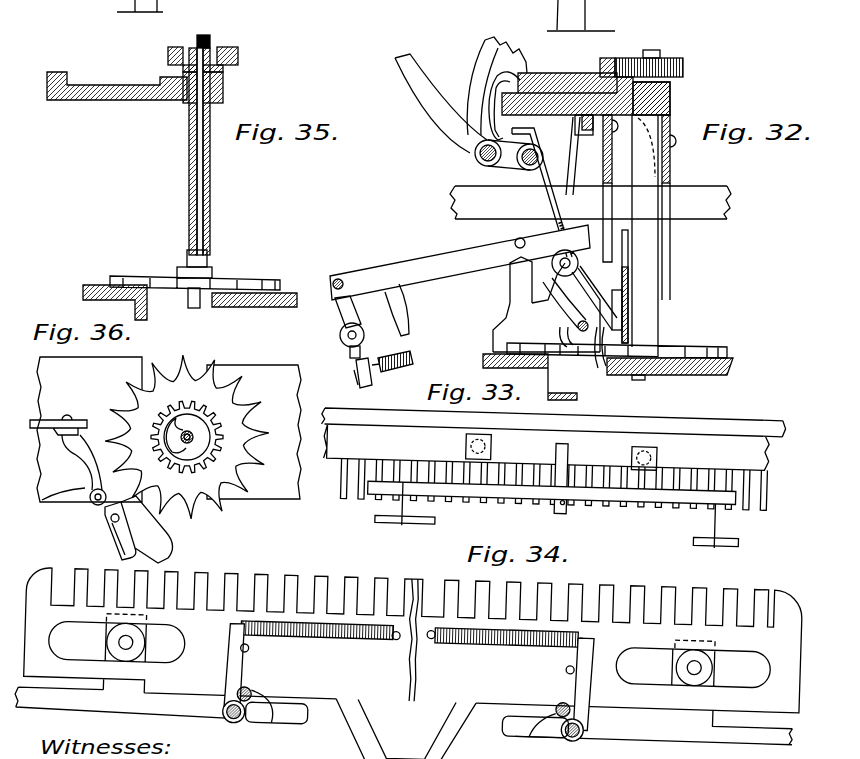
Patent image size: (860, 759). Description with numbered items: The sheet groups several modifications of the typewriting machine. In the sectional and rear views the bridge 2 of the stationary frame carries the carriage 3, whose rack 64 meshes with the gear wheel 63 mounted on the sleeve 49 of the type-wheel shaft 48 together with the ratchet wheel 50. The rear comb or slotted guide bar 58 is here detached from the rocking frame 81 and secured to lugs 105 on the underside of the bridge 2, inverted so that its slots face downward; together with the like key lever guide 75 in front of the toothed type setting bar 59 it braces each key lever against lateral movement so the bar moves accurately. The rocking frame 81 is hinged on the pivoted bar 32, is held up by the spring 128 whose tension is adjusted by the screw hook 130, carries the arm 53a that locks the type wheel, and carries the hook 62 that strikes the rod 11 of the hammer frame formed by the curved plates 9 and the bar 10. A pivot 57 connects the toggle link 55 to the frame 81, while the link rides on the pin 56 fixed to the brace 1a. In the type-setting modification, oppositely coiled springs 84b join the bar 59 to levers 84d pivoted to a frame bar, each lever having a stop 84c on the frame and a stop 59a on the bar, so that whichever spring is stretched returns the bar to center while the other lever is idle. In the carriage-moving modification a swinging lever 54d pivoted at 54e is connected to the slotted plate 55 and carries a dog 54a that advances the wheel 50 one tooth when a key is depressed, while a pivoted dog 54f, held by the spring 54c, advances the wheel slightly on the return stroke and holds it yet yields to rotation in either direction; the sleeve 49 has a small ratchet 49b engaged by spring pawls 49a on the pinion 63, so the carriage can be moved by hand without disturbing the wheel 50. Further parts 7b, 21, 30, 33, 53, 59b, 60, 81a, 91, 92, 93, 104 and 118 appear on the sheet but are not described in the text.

In FIG. 36, the brace 1a is at (169, 429).
In FIG. 33, the brace 1a is at (703, 385).
In FIG. 35, the bridge 2 is at (108, 100).
In FIG. 32, the bridge 2 is at (497, 80).
In FIG. 34, the bridge 2 is at (347, 410).
In FIG. 32, the carriage 3 is at (532, 72).
In FIG. 34, the frame bar 7b is at (205, 714).
In FIG. 32, the curved plate 9 is at (425, 108).
In FIG. 32, the bar 10 is at (476, 160).
In FIG. 32, the rod 11 is at (518, 168).
In FIG. 32, the plate 21 is at (590, 193).
In FIG. 33, the block 30 is at (517, 276).
In FIG. 33, the pivoted bar 32 is at (339, 280).
In FIG. 34, the pivoted bar 32 is at (430, 522).
In FIG. 33, the link 33 is at (339, 321).
In FIG. 35, the shaft 48 is at (216, 32).
In FIG. 36, the shaft 48 is at (207, 452).
In FIG. 32, the shaft 48 is at (660, 52).
In FIG. 35, the sleeve 49 is at (211, 164).
In FIG. 36, the sleeve 49 is at (190, 418).
In FIG. 32, the sleeve 49 is at (650, 288).
In FIG. 35, the spring pawls 49a is at (238, 66).
In FIG. 36, the spring pawls 49a is at (204, 446).
In FIG. 35, the small ratchet 49b is at (186, 38).
In FIG. 36, the small ratchet 49b is at (164, 417).
In FIG. 35, the ratchet wheel 50 is at (226, 283).
In FIG. 36, the ratchet wheel 50 is at (200, 405).
In FIG. 33, the ratchet wheel 50 is at (697, 350).
In FIG. 35, the collar 53 is at (224, 96).
In FIG. 32, the collar 53 is at (671, 98).
In FIG. 33, the arm 53a is at (406, 302).
In FIG. 36, the dog 54a is at (72, 448).
In FIG. 36, the spring 54c is at (112, 530).
In FIG. 36, the swinging lever 54d is at (94, 504).
In FIG. 36, the pivot 54e is at (58, 507).
In FIG. 36, the pivoted dog 54f is at (170, 545).
In FIG. 36, the toggle link 55 is at (48, 420).
In FIG. 33, the toggle link 55 is at (565, 304).
In FIG. 33, the pin 56 is at (563, 329).
In FIG. 33, the pivot 57 is at (574, 256).
In FIG. 32, the key-lever-guide 58 is at (603, 158).
In FIG. 34, the key-lever-guide 58 is at (562, 449).
In FIG. 32, the toothed bar 59 is at (630, 276).
In FIG. 34, the toothed bar 59 is at (411, 663).
In FIG. 34, the stop 59a is at (251, 645).
In FIG. 34, the slot 59b is at (681, 600).
In FIG. 33, the spring 60 is at (598, 370).
In FIG. 32, the hook 62 is at (538, 140).
In FIG. 34, the hook 62 is at (570, 452).
In FIG. 35, the gear wheel 63 is at (236, 52).
In FIG. 36, the gear wheel 63 is at (212, 434).
In FIG. 32, the gear wheel 63 is at (683, 68).
In FIG. 32, the rack 64 is at (600, 62).
In FIG. 32, the key lever guide 75 is at (671, 150).
In FIG. 33, the rocking frame 81 is at (460, 262).
In FIG. 34, the rocking frame 81 is at (400, 510).
In FIG. 33, the lug 81a is at (361, 351).
In FIG. 34, the oppositely coiled springs 84b is at (410, 646).
In FIG. 34, the stop 84c is at (265, 708).
In FIG. 34, the lever 84d is at (409, 683).
In FIG. 32, the bar 91 is at (628, 308).
In FIG. 34, the bar 91 is at (135, 685).
In FIG. 34, the roller 92 is at (112, 640).
In FIG. 34, the slot 93 is at (180, 637).
In FIG. 32, the wire 104 is at (581, 166).
In FIG. 32, the lugs 105 is at (550, 170).
In FIG. 34, the lugs 105 is at (494, 446).
In FIG. 32, the arm 118 is at (470, 118).
In FIG. 33, the spring 128 is at (406, 368).
In FIG. 33, the screw hook 130 is at (378, 375).